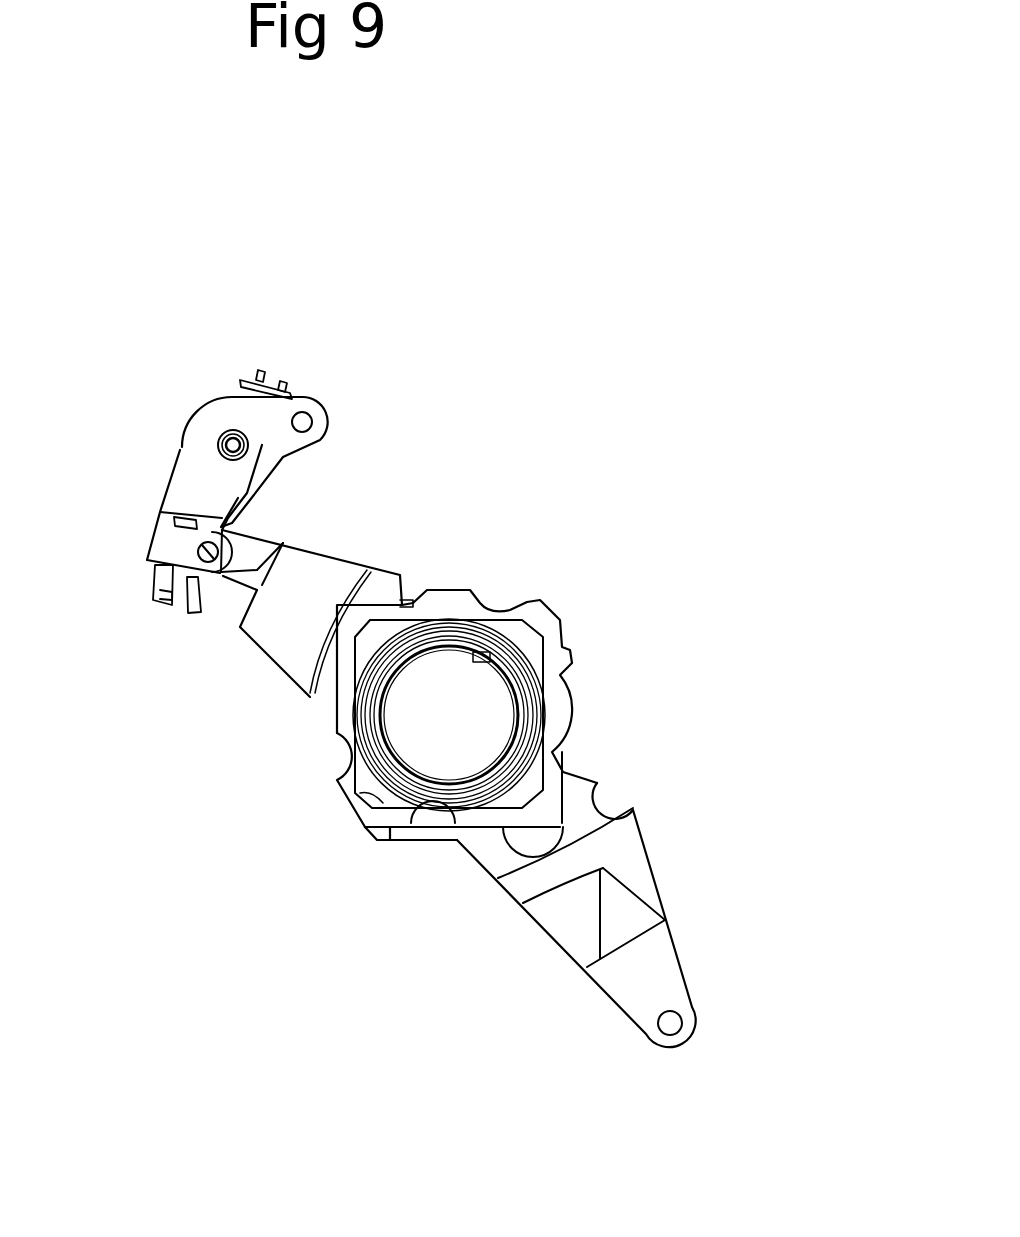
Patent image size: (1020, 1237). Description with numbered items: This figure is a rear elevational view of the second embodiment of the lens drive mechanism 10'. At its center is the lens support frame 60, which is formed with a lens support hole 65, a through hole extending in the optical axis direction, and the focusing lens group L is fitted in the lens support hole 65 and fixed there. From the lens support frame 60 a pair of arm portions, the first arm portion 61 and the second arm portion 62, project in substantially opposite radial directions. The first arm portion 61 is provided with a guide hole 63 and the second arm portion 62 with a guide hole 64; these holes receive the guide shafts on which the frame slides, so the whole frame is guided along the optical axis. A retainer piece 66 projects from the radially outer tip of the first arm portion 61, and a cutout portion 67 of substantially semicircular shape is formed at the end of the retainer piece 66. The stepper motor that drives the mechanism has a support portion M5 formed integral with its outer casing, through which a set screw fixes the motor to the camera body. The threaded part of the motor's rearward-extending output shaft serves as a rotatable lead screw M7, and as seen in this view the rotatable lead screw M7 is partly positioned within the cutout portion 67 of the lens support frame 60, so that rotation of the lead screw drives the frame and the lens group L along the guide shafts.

The lens drive mechanism 10' is at (485, 718).
The lens support frame 60 is at (400, 840).
The first arm portion 61 is at (336, 570).
The second arm portion 62 is at (632, 868).
The guide hole 63 is at (212, 575).
The guide hole 64 is at (672, 1025).
The lens support hole 65 is at (480, 656).
The retainer piece 66 is at (172, 490).
The cutout portion 67 is at (250, 450).
The rotatable lead screw M7 is at (234, 432).
The support portion M5 is at (318, 431).
The focusing lens group L is at (497, 717).